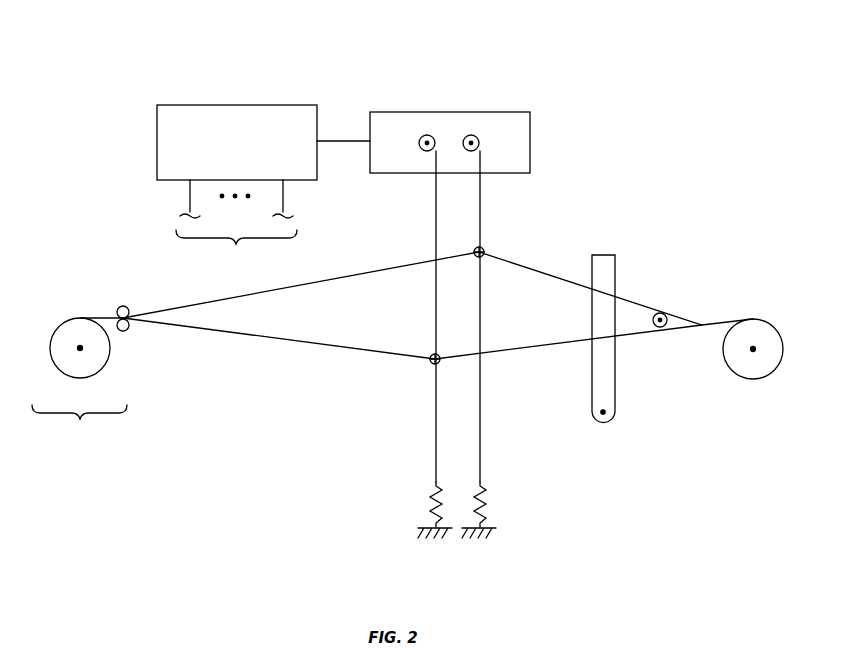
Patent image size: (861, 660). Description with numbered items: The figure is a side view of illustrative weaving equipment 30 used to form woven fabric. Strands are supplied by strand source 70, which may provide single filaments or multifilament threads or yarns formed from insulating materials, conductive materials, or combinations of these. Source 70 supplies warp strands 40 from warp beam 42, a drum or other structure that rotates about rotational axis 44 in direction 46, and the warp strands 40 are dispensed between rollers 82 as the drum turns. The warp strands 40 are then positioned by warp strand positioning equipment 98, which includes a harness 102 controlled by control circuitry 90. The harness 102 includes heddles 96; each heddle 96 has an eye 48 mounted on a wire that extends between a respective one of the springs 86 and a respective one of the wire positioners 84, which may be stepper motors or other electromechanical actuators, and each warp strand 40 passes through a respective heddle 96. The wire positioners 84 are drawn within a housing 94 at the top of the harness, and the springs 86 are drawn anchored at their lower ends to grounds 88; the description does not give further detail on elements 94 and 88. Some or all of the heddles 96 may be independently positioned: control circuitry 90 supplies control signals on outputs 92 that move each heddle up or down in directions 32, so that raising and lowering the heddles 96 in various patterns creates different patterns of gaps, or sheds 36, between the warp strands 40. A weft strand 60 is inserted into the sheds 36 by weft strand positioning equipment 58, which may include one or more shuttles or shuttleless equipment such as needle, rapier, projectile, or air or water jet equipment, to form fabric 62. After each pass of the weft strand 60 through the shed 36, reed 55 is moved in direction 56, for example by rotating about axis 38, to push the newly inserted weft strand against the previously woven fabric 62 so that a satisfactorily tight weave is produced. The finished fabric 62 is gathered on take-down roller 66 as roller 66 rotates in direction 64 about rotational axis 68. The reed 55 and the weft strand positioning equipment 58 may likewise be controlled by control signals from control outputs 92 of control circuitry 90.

The weaving equipment 30 is at (657, 70).
The control circuitry 90 is at (256, 105).
The outputs 92 is at (337, 140).
The positioner housing 94 is at (530, 130).
The wire positioners 84 is at (430, 126).
The warp strand positioning equipment 98 is at (558, 94).
The harness 102 is at (416, 216).
The heddles 96 is at (483, 385).
The eye 48 is at (486, 247).
The springs 86 is at (405, 496).
The ground anchors 88 is at (420, 527).
The warp strands 40 is at (290, 350).
The rollers 82 is at (124, 302).
The warp beam 42 is at (85, 368).
The rotational axis 44 is at (78, 350).
The direction 46 is at (68, 304).
The strand source 70 is at (79, 422).
The reed 55 is at (592, 375).
The axis 38 is at (606, 412).
The directions 32 is at (580, 195).
The direction 56 is at (628, 265).
The weft strand 60 is at (663, 313).
The weft strand positioning equipment 58 is at (655, 327).
The sheds 36 is at (680, 328).
The fabric 62 is at (715, 320).
The take-down roller 66 is at (757, 381).
The rotational axis 68 is at (757, 350).
The direction 64 is at (765, 305).